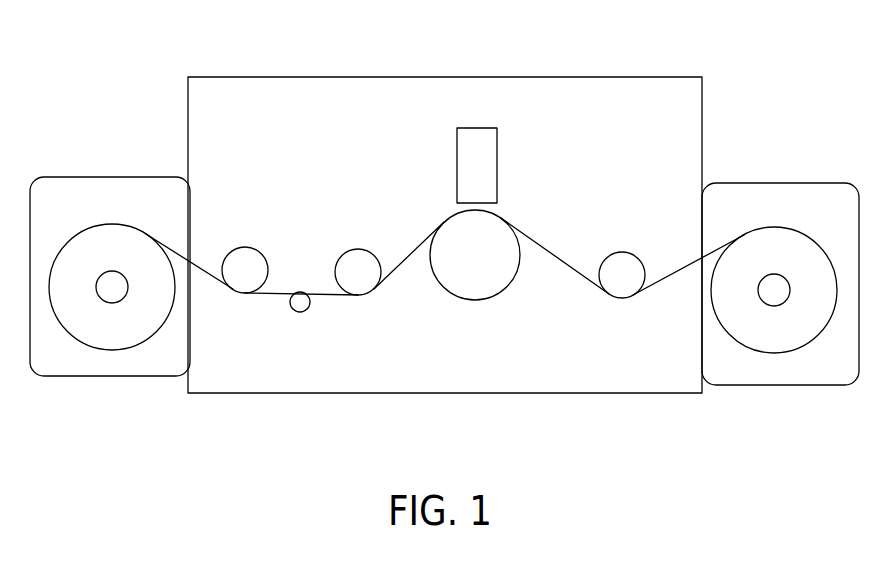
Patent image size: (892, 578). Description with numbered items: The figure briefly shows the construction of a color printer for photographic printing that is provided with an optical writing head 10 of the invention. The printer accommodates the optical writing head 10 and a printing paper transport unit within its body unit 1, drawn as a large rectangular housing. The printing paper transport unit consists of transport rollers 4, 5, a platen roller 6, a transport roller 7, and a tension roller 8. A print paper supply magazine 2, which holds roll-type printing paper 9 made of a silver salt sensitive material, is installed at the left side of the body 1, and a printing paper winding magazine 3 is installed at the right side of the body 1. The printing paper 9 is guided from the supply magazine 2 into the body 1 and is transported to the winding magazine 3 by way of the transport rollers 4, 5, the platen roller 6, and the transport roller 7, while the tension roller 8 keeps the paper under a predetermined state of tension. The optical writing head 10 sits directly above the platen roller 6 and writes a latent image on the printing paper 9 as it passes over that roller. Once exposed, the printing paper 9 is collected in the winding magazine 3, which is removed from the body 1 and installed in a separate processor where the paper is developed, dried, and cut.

The body unit 1 is at (298, 77).
The print paper supply magazine 2 is at (145, 177).
The printing paper winding magazine 3 is at (775, 183).
The transport roller 4 is at (248, 247).
The transport roller 5 is at (360, 249).
The platen roller 6 is at (468, 300).
The transport roller 7 is at (625, 252).
The tension roller 8 is at (305, 312).
The printing paper 9 is at (105, 222).
The optical writing head 10 is at (504, 147).